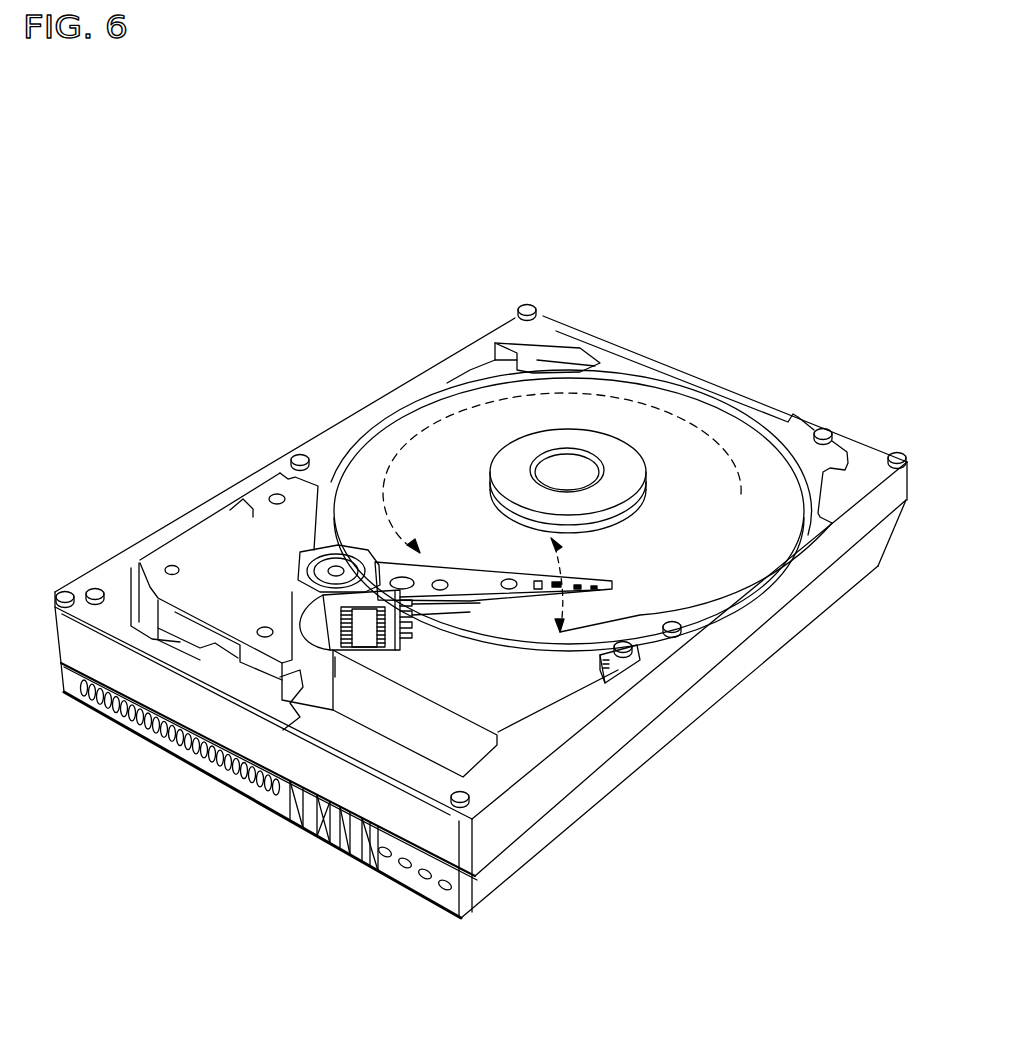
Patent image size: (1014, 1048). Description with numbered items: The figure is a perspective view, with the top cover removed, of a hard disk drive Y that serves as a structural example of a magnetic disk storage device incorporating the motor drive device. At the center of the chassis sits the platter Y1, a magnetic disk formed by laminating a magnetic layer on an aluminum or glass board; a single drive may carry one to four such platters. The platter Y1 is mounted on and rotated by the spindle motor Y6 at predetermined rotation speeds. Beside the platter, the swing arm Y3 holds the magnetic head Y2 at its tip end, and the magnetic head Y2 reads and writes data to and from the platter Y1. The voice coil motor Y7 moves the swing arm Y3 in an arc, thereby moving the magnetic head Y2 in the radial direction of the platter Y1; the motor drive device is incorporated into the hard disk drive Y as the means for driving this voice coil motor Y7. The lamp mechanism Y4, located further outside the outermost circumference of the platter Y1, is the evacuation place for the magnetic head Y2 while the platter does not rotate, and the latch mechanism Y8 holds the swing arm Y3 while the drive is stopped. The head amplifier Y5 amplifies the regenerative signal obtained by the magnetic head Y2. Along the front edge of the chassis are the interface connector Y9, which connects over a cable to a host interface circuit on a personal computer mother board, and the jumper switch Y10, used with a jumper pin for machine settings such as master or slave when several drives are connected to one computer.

The hard disk drive Y is at (159, 275).
The platter Y1 is at (726, 418).
The magnetic head Y2 is at (610, 581).
The swing arm Y3 is at (474, 580).
The lamp mechanism Y4 is at (597, 658).
The head amplifier Y5 is at (383, 628).
The spindle motor Y6 is at (501, 471).
The voice coil motor Y7 is at (218, 560).
The latch mechanism Y8 is at (162, 625).
The interface connector Y9 is at (178, 742).
The jumper switch Y10 is at (331, 828).